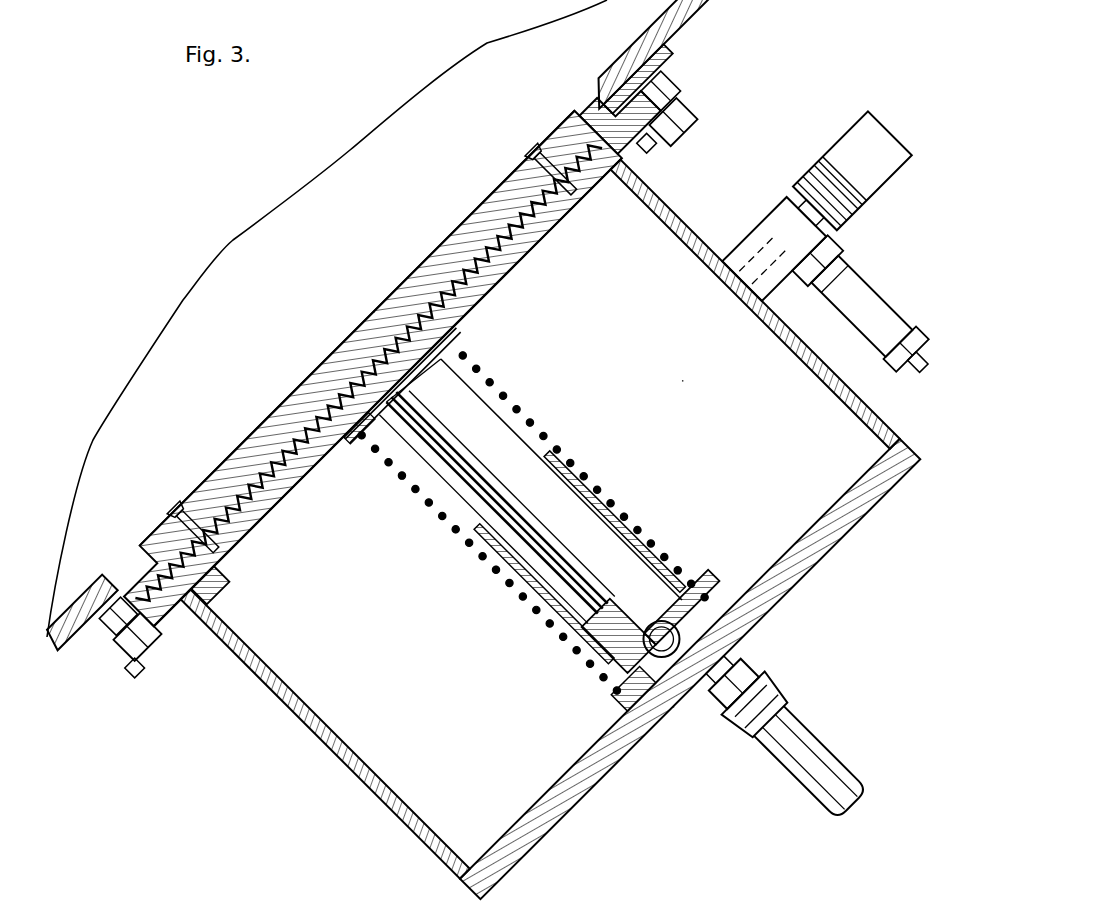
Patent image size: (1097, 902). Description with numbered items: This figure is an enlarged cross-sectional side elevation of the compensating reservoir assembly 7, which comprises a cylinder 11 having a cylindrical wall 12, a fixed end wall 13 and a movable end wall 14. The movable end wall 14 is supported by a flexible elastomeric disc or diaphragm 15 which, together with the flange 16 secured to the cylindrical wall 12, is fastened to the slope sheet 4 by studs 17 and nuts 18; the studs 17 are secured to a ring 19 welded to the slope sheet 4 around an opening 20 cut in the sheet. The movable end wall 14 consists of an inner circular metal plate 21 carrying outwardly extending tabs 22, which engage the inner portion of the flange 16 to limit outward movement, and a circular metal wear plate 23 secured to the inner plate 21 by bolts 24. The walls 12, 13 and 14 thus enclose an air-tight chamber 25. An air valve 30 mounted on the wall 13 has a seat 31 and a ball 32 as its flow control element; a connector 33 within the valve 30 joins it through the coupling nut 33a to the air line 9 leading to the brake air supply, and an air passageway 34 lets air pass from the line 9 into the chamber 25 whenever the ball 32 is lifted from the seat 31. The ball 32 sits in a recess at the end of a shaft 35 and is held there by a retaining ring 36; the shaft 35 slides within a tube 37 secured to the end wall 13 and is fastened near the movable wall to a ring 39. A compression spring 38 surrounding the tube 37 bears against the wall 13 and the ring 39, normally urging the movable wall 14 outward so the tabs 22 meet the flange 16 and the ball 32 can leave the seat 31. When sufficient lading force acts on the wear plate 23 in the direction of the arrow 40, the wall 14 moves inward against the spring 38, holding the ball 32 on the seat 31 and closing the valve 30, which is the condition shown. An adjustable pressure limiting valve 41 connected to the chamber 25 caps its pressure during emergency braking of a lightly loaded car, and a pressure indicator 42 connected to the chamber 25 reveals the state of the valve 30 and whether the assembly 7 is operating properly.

The slope sheet 4 is at (617, 63).
The compensating reservoir assembly 7 is at (710, 230).
The air line 9 is at (807, 777).
The cylinder 11 is at (551, 530).
The cylindrical wall 12 is at (370, 770).
The fixed end wall 13 is at (523, 847).
The movable end wall 14 is at (277, 512).
The flexible elastomeric disc or diaphragm 15 is at (603, 117).
The flange 16 is at (107, 657).
The studs 17 is at (157, 660).
The nuts 18 is at (133, 670).
The ring 19 is at (657, 62).
The opening 20 is at (143, 567).
The inner circular metal plate 21 is at (500, 277).
The tabs 22 is at (227, 573).
The circular metal wear plate 23 is at (260, 423).
The bolts 24 is at (187, 510).
The air-tight chamber 25 is at (713, 401).
The air valve 30 is at (672, 714).
The seat 31 is at (627, 690).
The ball 32 is at (592, 663).
The connector 33 is at (727, 667).
The coupling nut 33a is at (763, 713).
The air passageway 34 is at (730, 612).
The shaft 35 is at (500, 433).
The retaining ring 36 is at (697, 620).
The tube 37 is at (583, 490).
The compression spring 38 is at (620, 500).
The ring 39 is at (457, 333).
The arrow 40 is at (350, 325).
The adjustable pressure limiting valve 41 is at (877, 313).
The pressure indicator 42 is at (897, 158).